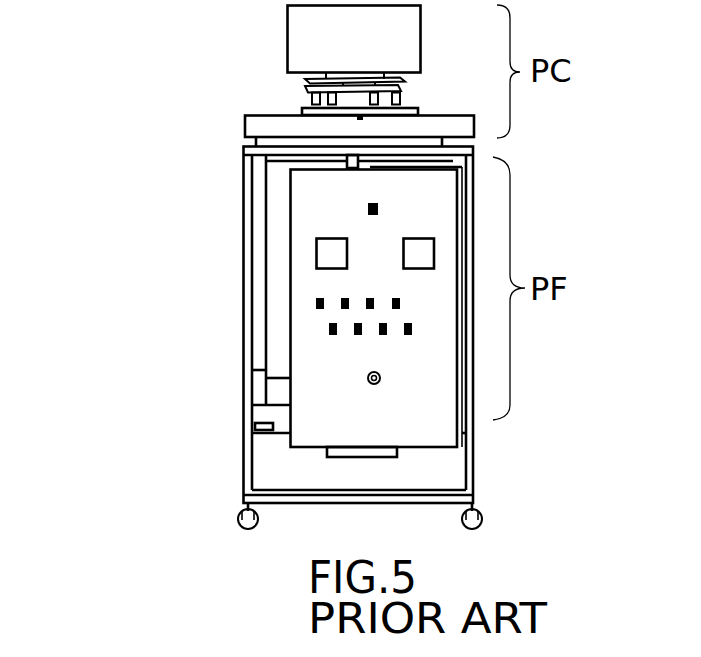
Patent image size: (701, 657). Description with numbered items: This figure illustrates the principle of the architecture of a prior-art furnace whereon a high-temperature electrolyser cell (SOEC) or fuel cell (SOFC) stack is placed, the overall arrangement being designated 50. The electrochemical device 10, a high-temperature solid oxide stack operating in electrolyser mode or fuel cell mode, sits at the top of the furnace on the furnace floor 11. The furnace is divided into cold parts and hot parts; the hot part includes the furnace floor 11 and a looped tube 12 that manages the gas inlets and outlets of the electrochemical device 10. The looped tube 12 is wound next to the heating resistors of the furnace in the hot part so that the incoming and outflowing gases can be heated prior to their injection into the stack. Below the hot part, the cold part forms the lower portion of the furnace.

The conventional system (prior art) 50 is at (136, 115).
The electrochemical device 10 is at (302, 32).
The looped tube 12 is at (300, 86).
The furnace floor 11 is at (245, 127).